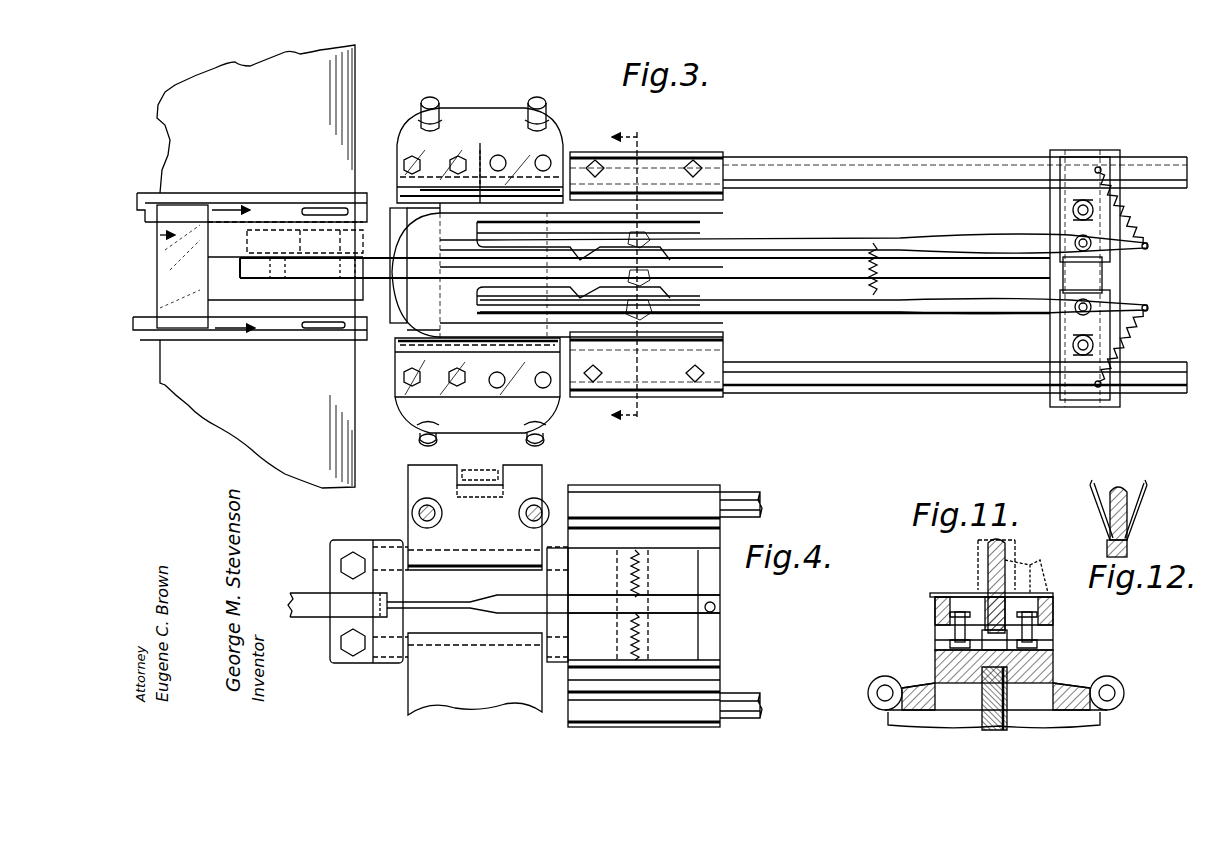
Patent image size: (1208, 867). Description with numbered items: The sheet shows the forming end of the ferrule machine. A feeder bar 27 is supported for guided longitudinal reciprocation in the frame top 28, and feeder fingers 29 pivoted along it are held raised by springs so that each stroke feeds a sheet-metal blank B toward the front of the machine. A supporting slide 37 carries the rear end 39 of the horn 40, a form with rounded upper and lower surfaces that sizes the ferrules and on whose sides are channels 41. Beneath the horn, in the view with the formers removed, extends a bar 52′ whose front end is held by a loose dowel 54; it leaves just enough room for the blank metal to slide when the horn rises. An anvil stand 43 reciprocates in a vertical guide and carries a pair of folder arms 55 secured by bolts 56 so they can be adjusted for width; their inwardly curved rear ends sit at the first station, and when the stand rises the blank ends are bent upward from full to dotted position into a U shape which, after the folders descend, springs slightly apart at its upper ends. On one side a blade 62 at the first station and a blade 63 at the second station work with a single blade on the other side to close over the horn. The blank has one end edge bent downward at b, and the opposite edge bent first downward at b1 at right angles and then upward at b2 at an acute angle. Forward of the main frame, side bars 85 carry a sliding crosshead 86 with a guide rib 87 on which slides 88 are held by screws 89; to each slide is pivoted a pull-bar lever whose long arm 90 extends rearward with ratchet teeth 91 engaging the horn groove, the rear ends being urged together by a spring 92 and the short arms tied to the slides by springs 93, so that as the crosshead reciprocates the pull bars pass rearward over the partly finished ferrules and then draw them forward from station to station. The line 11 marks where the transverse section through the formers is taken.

In FIG. 3, the section line 11— 11 is at (629, 277).
In FIG. 3, the feeder bar 27 is at (252, 205).
In FIG. 3, the frame top 28 is at (357, 68).
In FIG. 3, the feeder fingers 29 is at (350, 208).
In FIG. 3, the supporting slide 37 is at (247, 243).
In FIG. 3, the rear end of horn 39 is at (645, 268).
In FIG. 3, the horn 40 is at (728, 272).
In FIG. 11, the horn 40 is at (988, 562).
In FIG. 12, the horn 40 is at (1120, 487).
In FIG. 11, the channels 41 is at (988, 570).
In FIG. 12, the channels 41 is at (1105, 515).
In FIG. 11, the anvil stand 43 is at (1053, 648).
In FIG. 4, the bar 52′ is at (478, 610).
In FIG. 11, the bar 52′ is at (990, 630).
In FIG. 12, the bar 52′ is at (1107, 548).
In FIG. 4, the loose dowel 54 is at (716, 605).
In FIG. 3, the folder arms 55 is at (710, 318).
In FIG. 11, the folder arms 55 is at (935, 615).
In FIG. 3, the bolts 56 is at (648, 312).
In FIG. 11, the bolts 56 is at (1053, 628).
In FIG. 3, the blade 62 is at (440, 150).
In FIG. 3, the blade 63 is at (530, 160).
In FIG. 3, the side bars 85 is at (878, 362).
In FIG. 4, the side bars 85 is at (742, 490).
In FIG. 11, the side bars 85 is at (868, 700).
In FIG. 3, the crosshead 86 is at (1050, 274).
In FIG. 3, the guide rib 87 is at (1082, 152).
In FIG. 3, the slides 88 is at (1070, 170).
In FIG. 3, the screws 89 is at (1073, 213).
In FIG. 3, the long arm 90 is at (816, 240).
In FIG. 3, the ratchet teeth 91 is at (670, 250).
In FIG. 3, the spring 92 is at (882, 275).
In FIG. 3, the springs 93 is at (1128, 212).
In FIG. 3, the blank B is at (208, 296).
In FIG. 11, the blank B is at (1036, 590).
In FIG. 12, the blank B is at (1135, 518).
In FIG. 11, the downwardly bent end edge b is at (930, 597).
In FIG. 12, the downwardly bent end edge b is at (1090, 485).
In FIG. 11, the right-angle bent edge portion b1 is at (1053, 610).
In FIG. 12, the right-angle bent edge portion b1 is at (1148, 492).
In FIG. 11, the acute-angle bent edge portion b2 is at (1055, 597).
In FIG. 12, the acute-angle bent edge portion b2 is at (1148, 484).